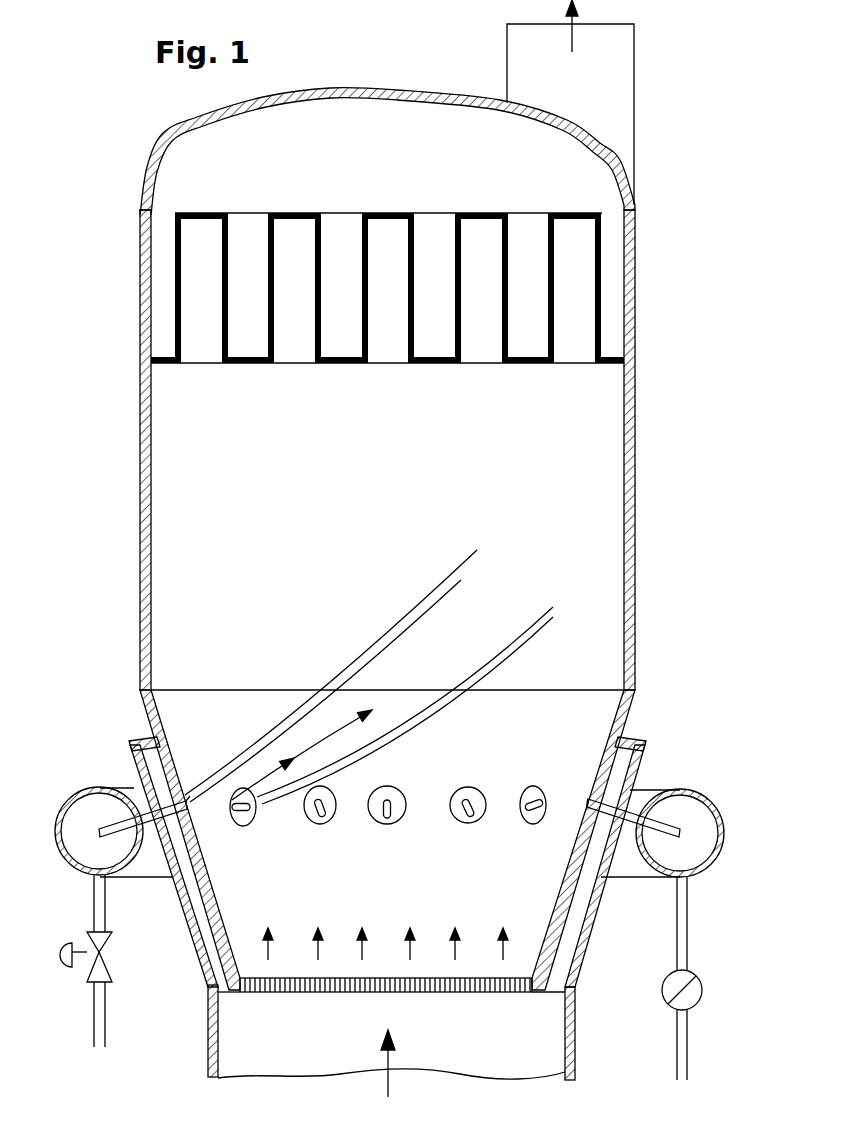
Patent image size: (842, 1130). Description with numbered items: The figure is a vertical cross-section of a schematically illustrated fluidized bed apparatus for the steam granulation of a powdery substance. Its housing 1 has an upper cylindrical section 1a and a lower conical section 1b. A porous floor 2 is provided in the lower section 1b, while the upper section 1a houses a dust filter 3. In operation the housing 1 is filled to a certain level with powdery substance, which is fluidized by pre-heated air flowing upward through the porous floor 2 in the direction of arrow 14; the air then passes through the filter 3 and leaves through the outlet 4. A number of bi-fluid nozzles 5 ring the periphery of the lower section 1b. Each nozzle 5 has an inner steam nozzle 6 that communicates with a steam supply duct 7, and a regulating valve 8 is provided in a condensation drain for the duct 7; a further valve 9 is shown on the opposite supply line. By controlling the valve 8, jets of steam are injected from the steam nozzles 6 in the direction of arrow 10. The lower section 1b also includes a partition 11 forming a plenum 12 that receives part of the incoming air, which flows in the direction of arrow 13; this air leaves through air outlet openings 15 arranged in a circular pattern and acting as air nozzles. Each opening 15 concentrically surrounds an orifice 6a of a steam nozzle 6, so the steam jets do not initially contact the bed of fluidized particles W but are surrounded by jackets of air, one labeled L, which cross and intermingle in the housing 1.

The housing 1 is at (390, 539).
The upper cylindrical section 1a is at (140, 422).
The lower conical section 1b is at (626, 722).
The porous floor 2 is at (307, 986).
The dust filter 3 is at (602, 265).
The outlet 4 is at (627, 63).
The bi-fluid nozzles 5 is at (190, 790).
The steam nozzle 6 is at (533, 788).
The orifice 6a is at (587, 802).
The steam supply duct 7 is at (73, 867).
The regulating valve 8 is at (90, 970).
The valve 9 is at (690, 1006).
The arrow 10 is at (265, 776).
The partition 11 is at (130, 773).
The plenum 12 is at (180, 897).
The arrow 13 is at (390, 1080).
The arrow 14 is at (466, 936).
The air outlet openings 15 is at (195, 818).
The jacket of air L is at (428, 600).
The bed of fluidized particles W is at (340, 589).